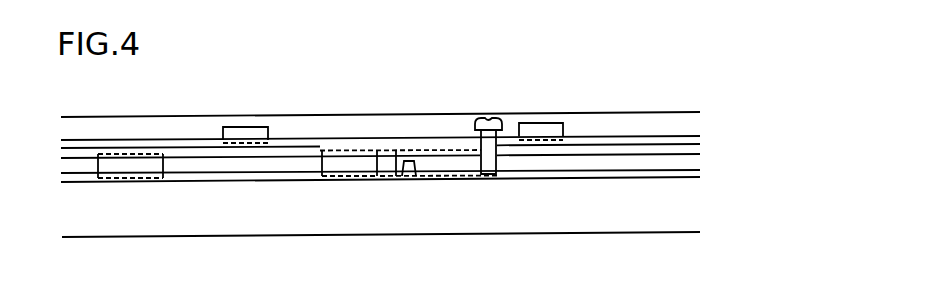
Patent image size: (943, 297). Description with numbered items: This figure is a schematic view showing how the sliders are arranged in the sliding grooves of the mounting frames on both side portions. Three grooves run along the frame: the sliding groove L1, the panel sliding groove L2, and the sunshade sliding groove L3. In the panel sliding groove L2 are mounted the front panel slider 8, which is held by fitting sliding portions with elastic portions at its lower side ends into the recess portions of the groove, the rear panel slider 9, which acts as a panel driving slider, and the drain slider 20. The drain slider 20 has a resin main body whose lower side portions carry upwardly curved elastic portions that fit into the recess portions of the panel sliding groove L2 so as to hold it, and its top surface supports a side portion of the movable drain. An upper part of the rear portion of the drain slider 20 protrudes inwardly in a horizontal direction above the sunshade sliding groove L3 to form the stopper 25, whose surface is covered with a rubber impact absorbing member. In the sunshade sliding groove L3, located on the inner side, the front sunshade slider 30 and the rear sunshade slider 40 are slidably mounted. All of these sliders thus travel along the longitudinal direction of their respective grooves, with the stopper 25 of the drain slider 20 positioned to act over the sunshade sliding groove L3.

The front panel slider 8 is at (132, 165).
The rear panel slider 9 is at (350, 165).
The drain slider 20 is at (446, 162).
The stopper 25 is at (490, 118).
The front sunshade slider 30 is at (253, 131).
The rear sunshade slider 40 is at (541, 123).
The sliding groove L1 is at (300, 213).
The panel sliding groove L2 is at (240, 162).
The sunshade sliding groove L3 is at (275, 124).